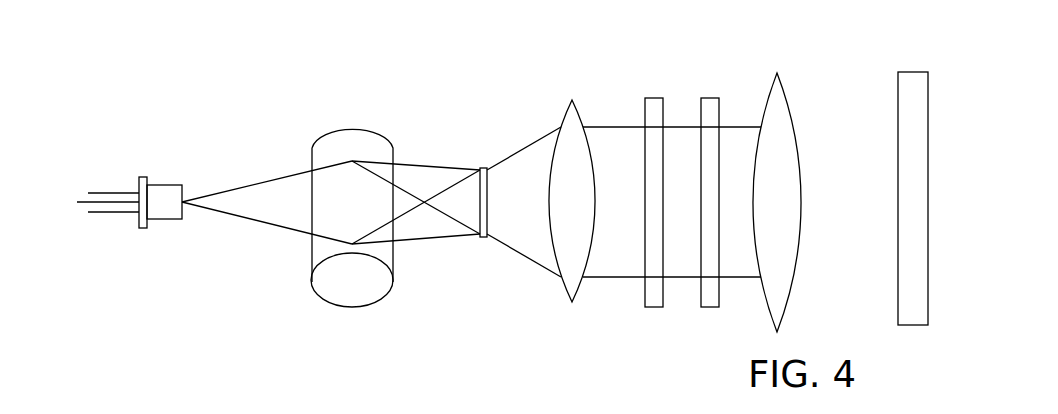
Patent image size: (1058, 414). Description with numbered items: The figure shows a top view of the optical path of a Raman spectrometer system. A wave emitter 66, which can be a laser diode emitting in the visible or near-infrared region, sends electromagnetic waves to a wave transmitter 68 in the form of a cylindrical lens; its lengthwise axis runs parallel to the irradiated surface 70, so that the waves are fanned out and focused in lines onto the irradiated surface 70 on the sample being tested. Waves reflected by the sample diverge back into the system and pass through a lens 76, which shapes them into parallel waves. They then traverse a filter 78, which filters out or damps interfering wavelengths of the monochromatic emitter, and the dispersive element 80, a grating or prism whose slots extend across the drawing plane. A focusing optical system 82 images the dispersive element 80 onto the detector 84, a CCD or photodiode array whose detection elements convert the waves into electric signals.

The wave emitter 66 is at (168, 186).
The wave transmitter 68 is at (340, 126).
The irradiated surface 70 is at (487, 213).
The lens 76 is at (572, 302).
The filter 78 is at (653, 98).
The dispersive element 80 is at (712, 98).
The focusing optical system 82 is at (782, 88).
The detector 84 is at (917, 72).